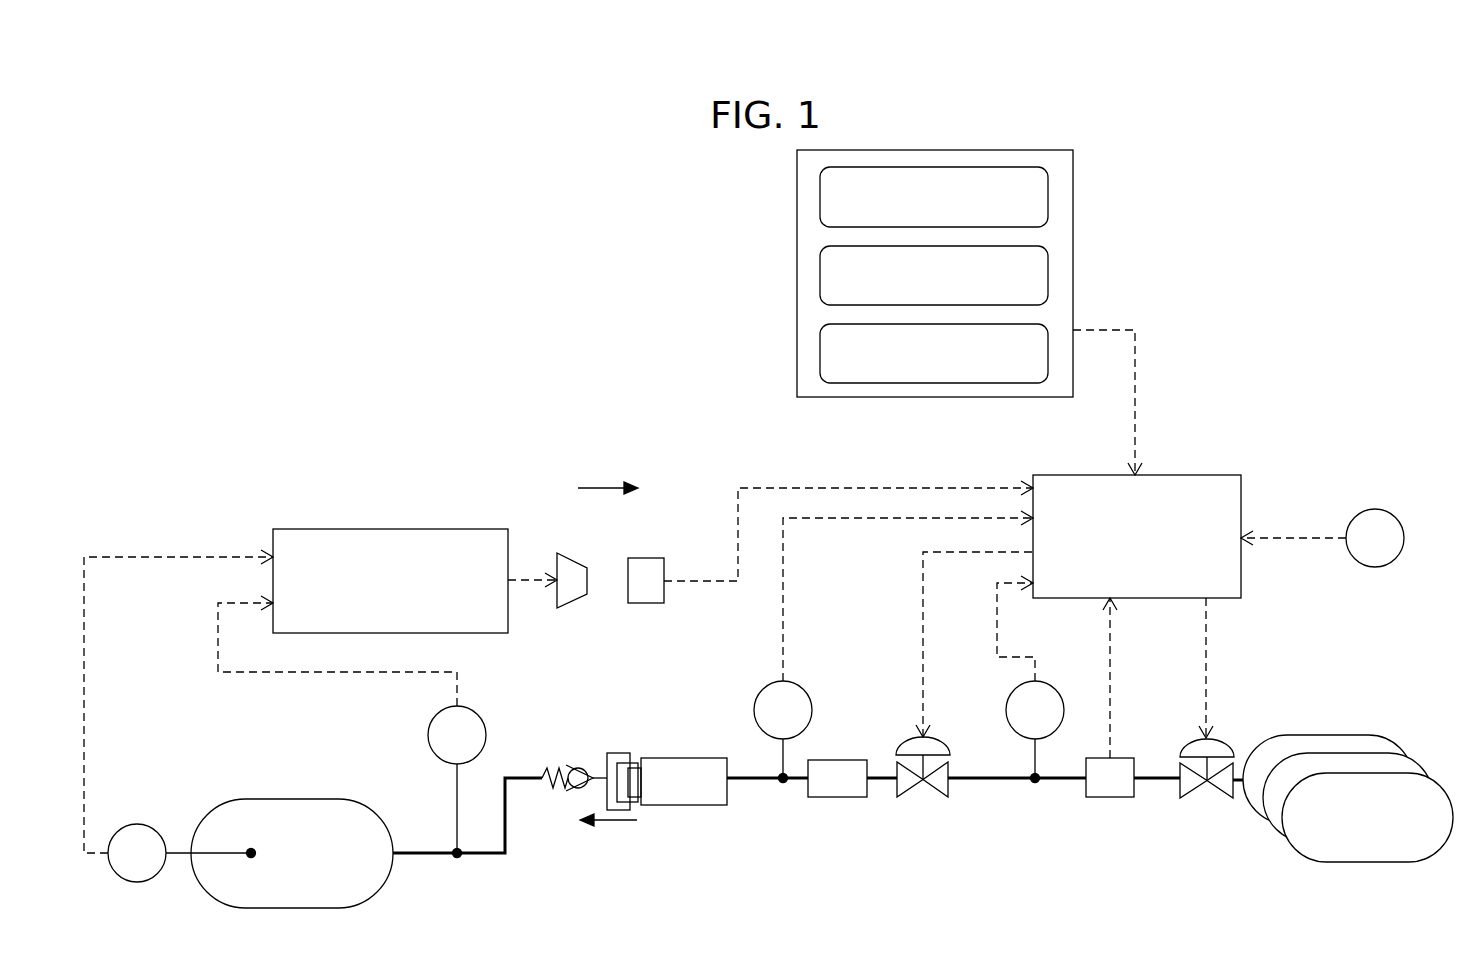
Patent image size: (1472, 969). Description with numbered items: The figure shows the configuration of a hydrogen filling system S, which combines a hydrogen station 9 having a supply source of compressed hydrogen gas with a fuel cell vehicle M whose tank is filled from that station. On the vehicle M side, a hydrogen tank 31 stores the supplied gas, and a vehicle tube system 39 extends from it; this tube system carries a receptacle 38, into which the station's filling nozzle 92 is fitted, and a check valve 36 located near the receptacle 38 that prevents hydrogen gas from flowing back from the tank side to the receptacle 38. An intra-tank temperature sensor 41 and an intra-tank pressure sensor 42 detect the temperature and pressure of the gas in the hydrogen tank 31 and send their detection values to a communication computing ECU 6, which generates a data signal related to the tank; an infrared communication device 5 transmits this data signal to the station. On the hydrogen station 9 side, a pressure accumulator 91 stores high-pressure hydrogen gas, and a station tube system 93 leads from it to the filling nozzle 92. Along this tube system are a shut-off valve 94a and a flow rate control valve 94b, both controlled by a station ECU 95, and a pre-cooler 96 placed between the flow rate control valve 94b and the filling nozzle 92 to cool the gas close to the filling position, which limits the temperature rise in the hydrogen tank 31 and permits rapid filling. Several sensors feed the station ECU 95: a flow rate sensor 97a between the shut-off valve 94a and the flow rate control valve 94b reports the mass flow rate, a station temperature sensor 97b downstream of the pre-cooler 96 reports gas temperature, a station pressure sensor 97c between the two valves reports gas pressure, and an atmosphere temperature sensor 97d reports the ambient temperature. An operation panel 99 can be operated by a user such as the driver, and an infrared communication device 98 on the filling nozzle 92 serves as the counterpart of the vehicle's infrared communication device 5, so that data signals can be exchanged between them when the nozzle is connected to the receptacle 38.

The hydrogen filling system S is at (307, 339).
The fuel cell vehicle M is at (430, 432).
The hydrogen station 9 is at (742, 339).
The operation panel 99 is at (1045, 132).
The station ECU 95 is at (1206, 470).
The atmosphere temperature sensor 97d is at (1389, 510).
The communication computing ECU 6 is at (410, 529).
The infrared communication device 5 is at (575, 557).
The infrared communication device 98 is at (650, 558).
The intra-tank pressure sensor 42 is at (472, 707).
The intra-tank temperature sensor 41 is at (141, 824).
The hydrogen tank 31 is at (336, 801).
The vehicle tube system 39 is at (510, 858).
The check valve 36 is at (560, 767).
The receptacle 38 is at (617, 753).
The filling nozzle 92 is at (688, 758).
The station tube system 93 is at (745, 781).
The station temperature sensor 97b is at (792, 683).
The pre-cooler 96 is at (838, 760).
The flow rate control valve 94b is at (932, 740).
The station pressure sensor 97c is at (1042, 682).
The flow rate sensor 97a is at (1114, 758).
The shut-off valve 94a is at (1220, 740).
The pressure accumulator 91 is at (1358, 736).